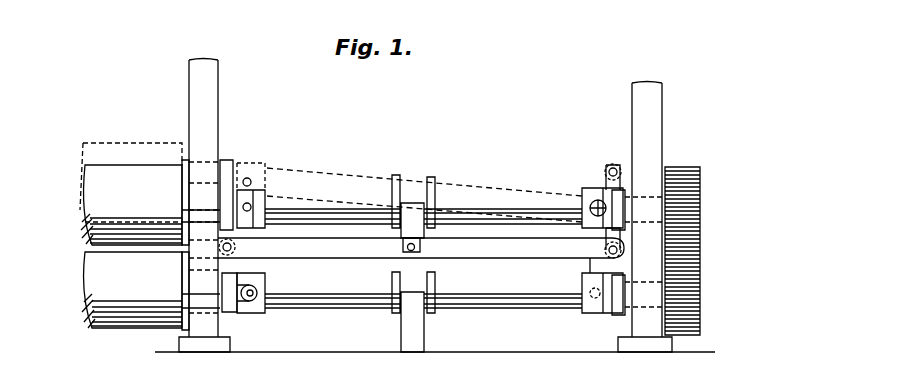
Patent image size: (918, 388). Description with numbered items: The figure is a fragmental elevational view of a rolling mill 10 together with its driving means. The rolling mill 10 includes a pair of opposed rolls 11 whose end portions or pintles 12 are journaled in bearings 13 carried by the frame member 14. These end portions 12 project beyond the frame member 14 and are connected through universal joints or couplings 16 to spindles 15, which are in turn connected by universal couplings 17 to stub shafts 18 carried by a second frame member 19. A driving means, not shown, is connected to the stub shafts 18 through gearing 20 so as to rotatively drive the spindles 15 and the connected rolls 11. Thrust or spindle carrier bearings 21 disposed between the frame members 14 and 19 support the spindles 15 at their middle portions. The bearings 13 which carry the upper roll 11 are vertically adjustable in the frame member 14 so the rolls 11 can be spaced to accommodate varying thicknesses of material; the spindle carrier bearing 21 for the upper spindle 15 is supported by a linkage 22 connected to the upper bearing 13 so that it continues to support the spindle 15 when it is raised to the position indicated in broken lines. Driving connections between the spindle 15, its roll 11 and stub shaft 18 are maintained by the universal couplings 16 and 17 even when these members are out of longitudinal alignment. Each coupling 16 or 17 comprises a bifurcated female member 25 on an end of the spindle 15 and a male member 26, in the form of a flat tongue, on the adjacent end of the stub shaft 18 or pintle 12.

The rolling mill 10 is at (224, 101).
The rolls 11 is at (85, 227).
The end portions or pintles 12 is at (229, 168).
The bearings 13 is at (185, 213).
The frame member 14 is at (198, 89).
The spindles 15 is at (470, 205).
The universal joints or couplings 16 is at (274, 188).
The universal couplings 17 is at (584, 189).
The stub shafts 18 is at (627, 203).
The frame member 19 is at (650, 110).
The gearing 20 is at (702, 277).
The thrust or spindle carrier bearings 21 is at (410, 203).
The linkage 22 is at (352, 252).
The female member 25 is at (598, 190).
The male member 26 is at (597, 225).